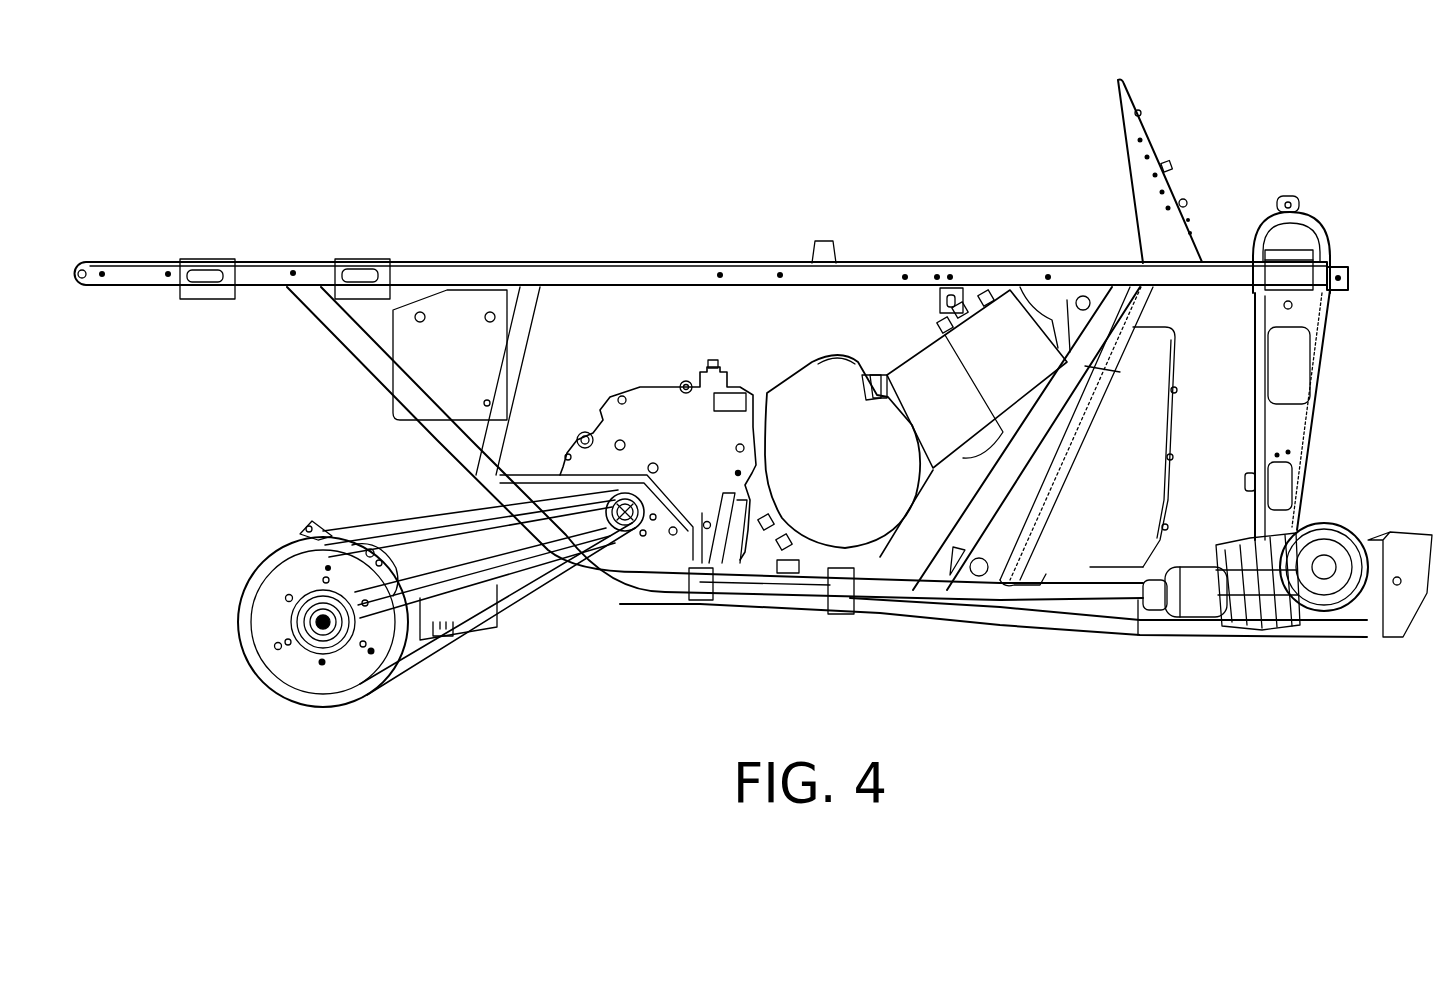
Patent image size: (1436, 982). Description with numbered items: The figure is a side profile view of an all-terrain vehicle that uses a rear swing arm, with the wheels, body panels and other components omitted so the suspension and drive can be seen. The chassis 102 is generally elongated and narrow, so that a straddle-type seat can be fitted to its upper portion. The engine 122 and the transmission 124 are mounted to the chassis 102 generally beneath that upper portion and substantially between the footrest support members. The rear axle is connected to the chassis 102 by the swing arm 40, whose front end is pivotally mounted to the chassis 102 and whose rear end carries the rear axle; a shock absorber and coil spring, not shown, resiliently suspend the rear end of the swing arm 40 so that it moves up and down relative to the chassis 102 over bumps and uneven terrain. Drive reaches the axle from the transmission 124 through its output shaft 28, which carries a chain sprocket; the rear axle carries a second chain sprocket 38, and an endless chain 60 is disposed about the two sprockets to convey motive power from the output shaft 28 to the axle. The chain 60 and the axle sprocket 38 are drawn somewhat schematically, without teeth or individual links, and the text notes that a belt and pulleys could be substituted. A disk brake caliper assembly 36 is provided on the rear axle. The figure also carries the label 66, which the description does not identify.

The chassis 102 is at (340, 339).
The engine 122 is at (869, 355).
The transmission 124 is at (657, 388).
The pivot bracket 66 is at (647, 507).
The output shaft 28 is at (628, 532).
The swing arm 40 is at (492, 584).
The endless chain 60 is at (406, 520).
The disk brake caliper assembly 36 is at (314, 524).
The chain sprocket 38 is at (302, 674).